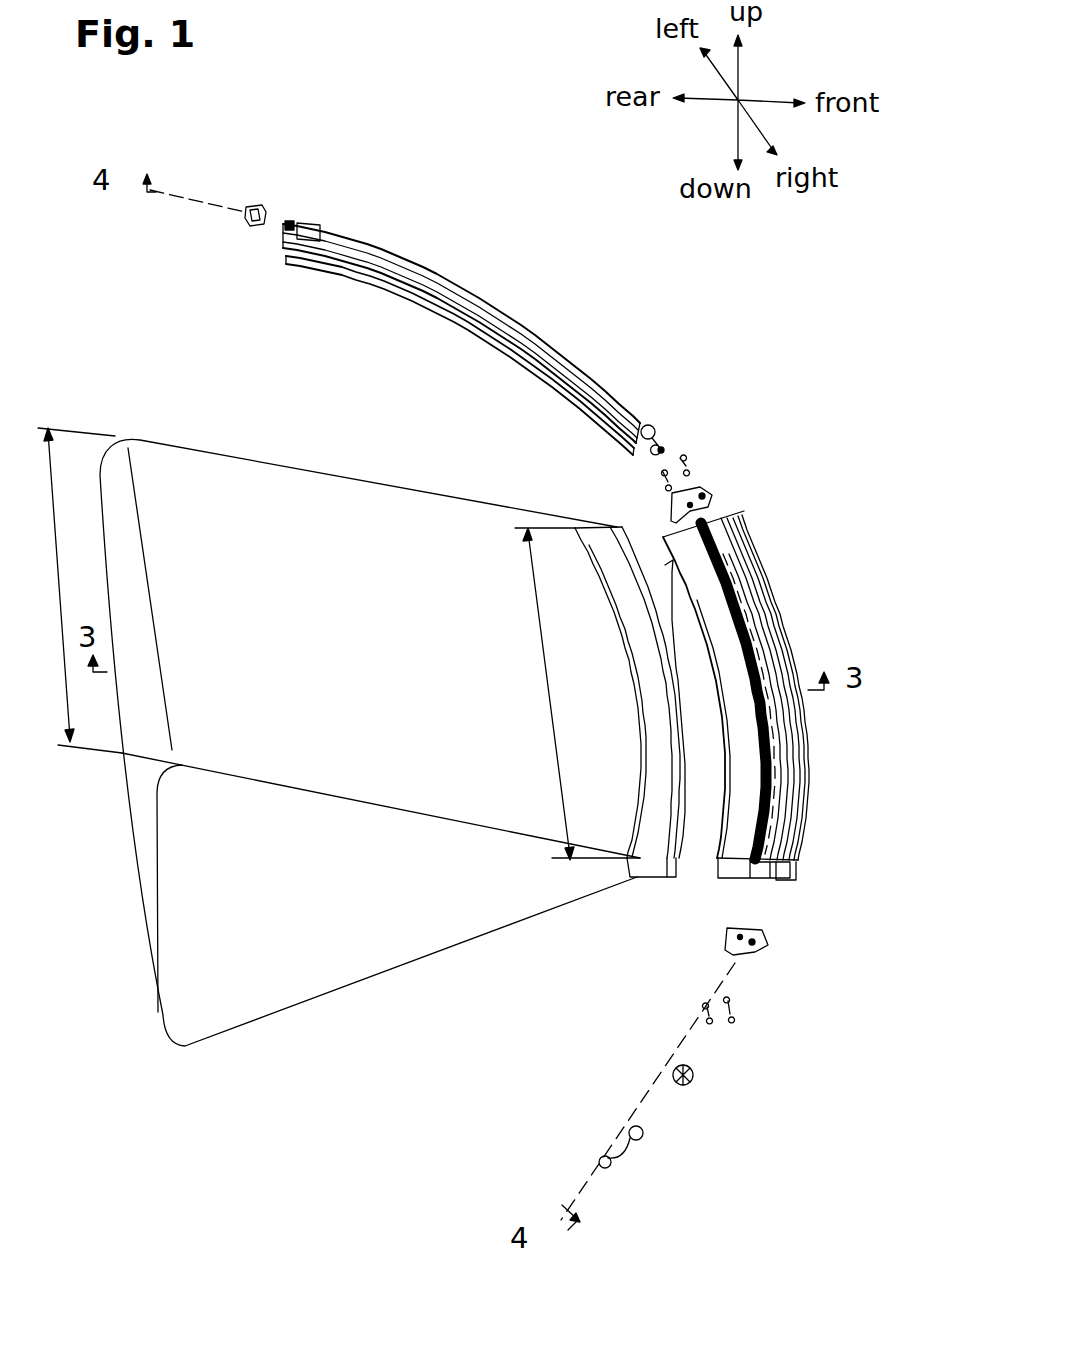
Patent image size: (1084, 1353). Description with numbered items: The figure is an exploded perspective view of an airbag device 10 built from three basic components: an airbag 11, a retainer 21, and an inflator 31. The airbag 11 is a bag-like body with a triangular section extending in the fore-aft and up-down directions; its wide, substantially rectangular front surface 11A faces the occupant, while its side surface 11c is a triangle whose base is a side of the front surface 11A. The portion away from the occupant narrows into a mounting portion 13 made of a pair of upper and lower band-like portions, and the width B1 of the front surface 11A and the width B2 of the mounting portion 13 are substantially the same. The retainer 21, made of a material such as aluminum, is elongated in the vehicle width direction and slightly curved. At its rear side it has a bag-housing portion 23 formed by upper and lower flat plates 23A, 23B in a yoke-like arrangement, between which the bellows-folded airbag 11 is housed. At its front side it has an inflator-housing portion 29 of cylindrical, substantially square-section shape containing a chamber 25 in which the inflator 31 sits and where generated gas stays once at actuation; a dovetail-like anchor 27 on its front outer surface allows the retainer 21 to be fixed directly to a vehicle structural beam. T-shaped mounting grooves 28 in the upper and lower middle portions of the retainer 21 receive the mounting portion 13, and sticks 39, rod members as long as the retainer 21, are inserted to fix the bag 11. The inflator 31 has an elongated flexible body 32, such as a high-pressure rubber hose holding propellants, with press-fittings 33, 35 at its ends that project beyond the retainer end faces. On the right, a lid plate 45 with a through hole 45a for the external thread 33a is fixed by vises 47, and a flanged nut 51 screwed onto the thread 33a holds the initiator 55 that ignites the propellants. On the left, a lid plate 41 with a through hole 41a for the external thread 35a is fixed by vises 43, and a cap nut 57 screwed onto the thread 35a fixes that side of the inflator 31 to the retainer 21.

The airbag device 10 is at (358, 803).
The airbag 11 is at (460, 907).
The front surface 11A is at (122, 768).
The side surface 11c is at (300, 912).
The mounting portion 13 is at (633, 865).
The retainer 21 is at (760, 726).
The bag-housing portion 23 is at (697, 900).
The upper flat plate 23A is at (722, 862).
The lower flat plate 23B is at (733, 873).
The chamber 25 is at (775, 882).
The anchor 27 is at (796, 848).
The mounting grooves 28 is at (762, 627).
The inflator-housing portion 29 is at (778, 786).
The inflator 31 is at (442, 295).
The body 32 is at (470, 292).
The press-fitting 33 is at (699, 397).
The external thread 33a is at (664, 438).
The press-fitting 35 is at (333, 197).
The external thread 35a is at (291, 222).
The sticks 39 is at (388, 272).
The lid plate 41 is at (738, 482).
The through hole 41a is at (705, 503).
The vises 43 is at (696, 455).
The lid plate 45 is at (783, 980).
The through hole 45a is at (748, 958).
The vises 47 is at (740, 1020).
The flanged nut 51 is at (694, 1075).
The initiator 55 is at (646, 1137).
The cap nut 57 is at (262, 204).
The width of front surface B1 is at (80, 590).
The width of mounting portion B2 is at (577, 694).